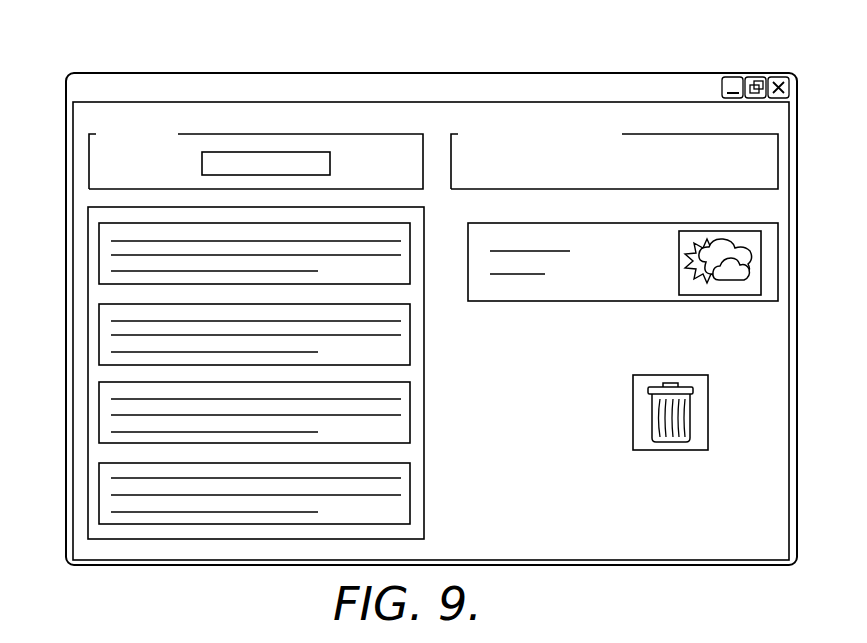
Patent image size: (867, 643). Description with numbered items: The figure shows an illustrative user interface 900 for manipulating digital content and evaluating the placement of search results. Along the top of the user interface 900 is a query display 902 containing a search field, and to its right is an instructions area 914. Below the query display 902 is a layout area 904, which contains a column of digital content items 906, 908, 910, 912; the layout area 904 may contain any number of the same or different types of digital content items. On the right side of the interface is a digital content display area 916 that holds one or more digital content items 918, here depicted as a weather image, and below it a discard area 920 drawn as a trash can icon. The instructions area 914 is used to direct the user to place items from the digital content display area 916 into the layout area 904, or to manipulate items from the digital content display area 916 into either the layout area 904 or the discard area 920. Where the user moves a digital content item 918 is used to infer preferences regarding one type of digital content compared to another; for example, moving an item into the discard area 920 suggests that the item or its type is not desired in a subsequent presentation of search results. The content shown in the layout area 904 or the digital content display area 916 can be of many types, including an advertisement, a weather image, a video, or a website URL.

The user interface 900 is at (190, 73).
The query display 902 is at (88, 165).
The layout area 904 is at (220, 373).
The digital content item 906 is at (99, 252).
The digital content item 908 is at (99, 343).
The digital content item 910 is at (99, 415).
The digital content item 912 is at (99, 494).
The instructions area 914 is at (778, 158).
The digital content display area 916 is at (657, 262).
The digital content item 918 is at (761, 277).
The discard area 920 is at (670, 375).